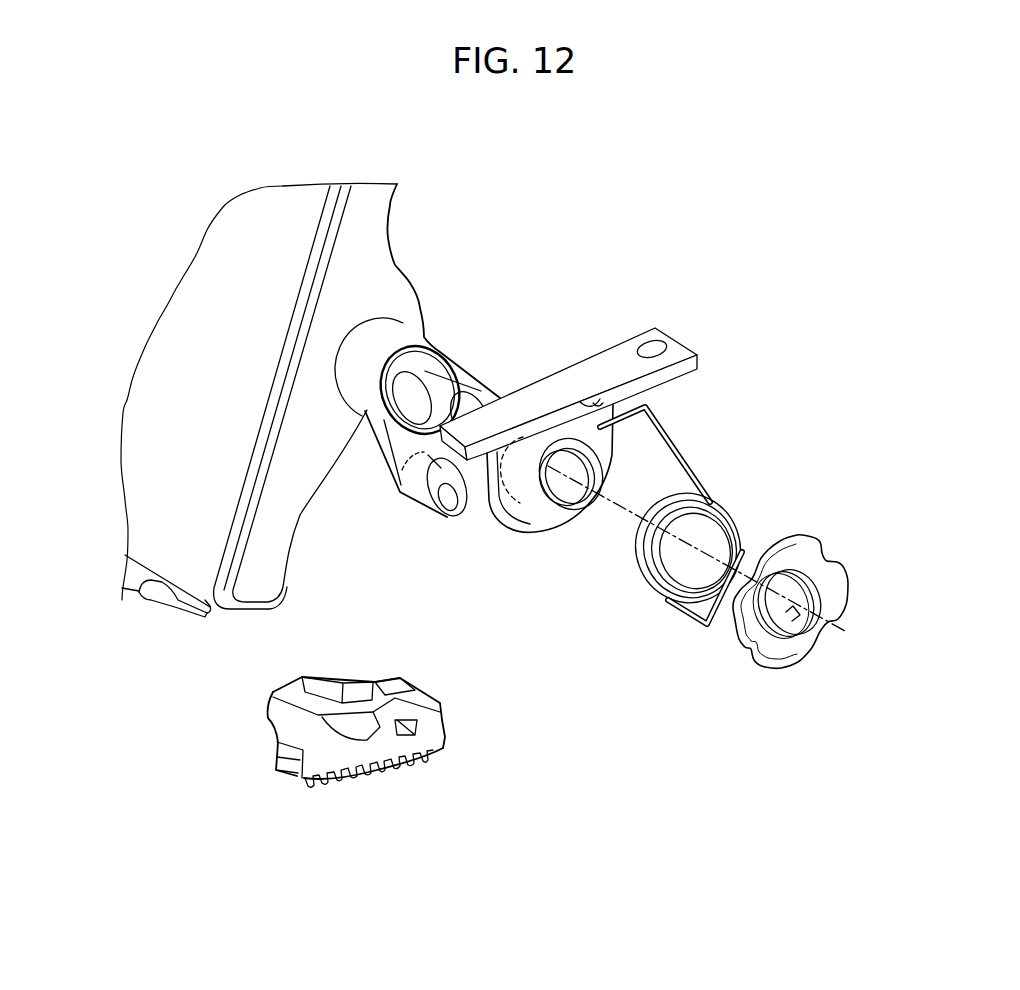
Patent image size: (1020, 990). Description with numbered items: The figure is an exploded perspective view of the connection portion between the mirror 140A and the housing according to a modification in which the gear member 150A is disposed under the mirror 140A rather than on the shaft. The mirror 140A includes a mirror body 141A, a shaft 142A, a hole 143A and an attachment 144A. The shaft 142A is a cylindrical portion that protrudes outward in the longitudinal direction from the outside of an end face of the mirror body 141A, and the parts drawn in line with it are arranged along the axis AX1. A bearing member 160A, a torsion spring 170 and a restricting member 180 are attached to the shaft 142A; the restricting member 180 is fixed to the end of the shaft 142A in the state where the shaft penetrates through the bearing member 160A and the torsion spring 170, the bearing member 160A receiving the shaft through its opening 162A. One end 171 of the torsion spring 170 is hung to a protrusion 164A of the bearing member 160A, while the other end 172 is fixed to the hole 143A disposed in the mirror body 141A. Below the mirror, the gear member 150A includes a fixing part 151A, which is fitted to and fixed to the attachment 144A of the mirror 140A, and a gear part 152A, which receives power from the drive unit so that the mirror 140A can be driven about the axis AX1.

The mirror 140A is at (404, 235).
The mirror body 141A is at (387, 269).
The shaft 142A is at (457, 376).
The hole 143A is at (447, 497).
The attachment 144A is at (167, 608).
The gear member 150A is at (407, 744).
The fixing part 151A is at (340, 684).
The gear part 152A is at (360, 788).
The bearing member 160A is at (620, 343).
The hole 162A is at (563, 497).
The protrusion 164A is at (643, 384).
The torsion spring 170 is at (640, 584).
The one end 171 is at (627, 419).
The other end 172 is at (687, 616).
The restricting member 180 is at (770, 662).
The axis AX1 is at (713, 563).